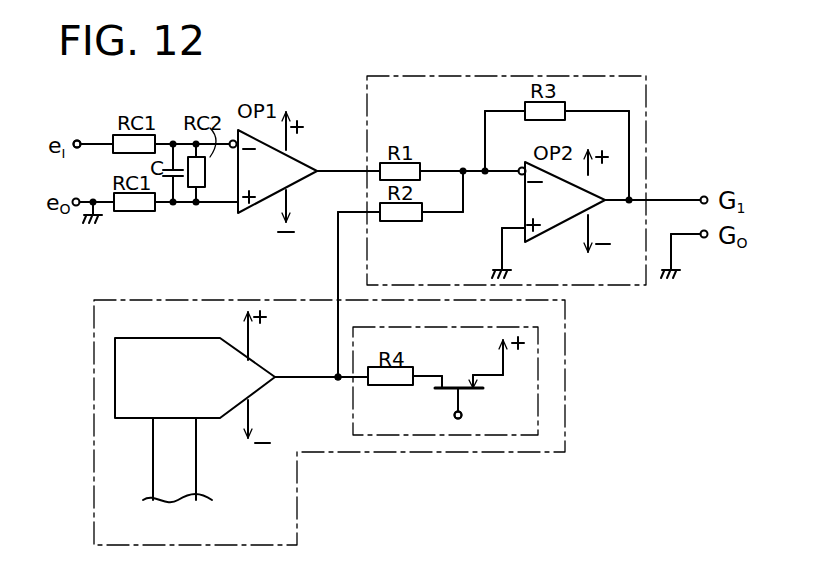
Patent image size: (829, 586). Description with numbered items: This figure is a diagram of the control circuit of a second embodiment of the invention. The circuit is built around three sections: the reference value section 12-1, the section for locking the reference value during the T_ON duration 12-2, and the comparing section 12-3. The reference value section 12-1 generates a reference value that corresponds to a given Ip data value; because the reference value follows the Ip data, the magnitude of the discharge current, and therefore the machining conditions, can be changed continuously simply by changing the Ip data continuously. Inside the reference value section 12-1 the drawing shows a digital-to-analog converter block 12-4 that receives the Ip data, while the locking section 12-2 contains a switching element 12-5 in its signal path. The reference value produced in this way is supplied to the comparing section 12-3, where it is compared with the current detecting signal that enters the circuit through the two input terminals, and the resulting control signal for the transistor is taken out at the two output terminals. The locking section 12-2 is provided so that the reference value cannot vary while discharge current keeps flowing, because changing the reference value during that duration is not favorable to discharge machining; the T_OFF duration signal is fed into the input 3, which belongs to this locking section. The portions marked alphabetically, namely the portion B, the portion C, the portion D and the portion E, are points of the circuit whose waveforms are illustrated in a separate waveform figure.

The reference value section 12-1 is at (117, 300).
The section for locking the reference value during the T_ON duration 12-2 is at (538, 383).
The comparing section 12-3 is at (627, 287).
The 12-bit D/A converter 12-4 is at (188, 338).
The transistor switch 12-5 is at (443, 390).
The portion B is at (88, 132).
The portion C is at (338, 160).
The portion D is at (305, 370).
The portion E is at (678, 190).
The input point ③ 3 is at (475, 415).